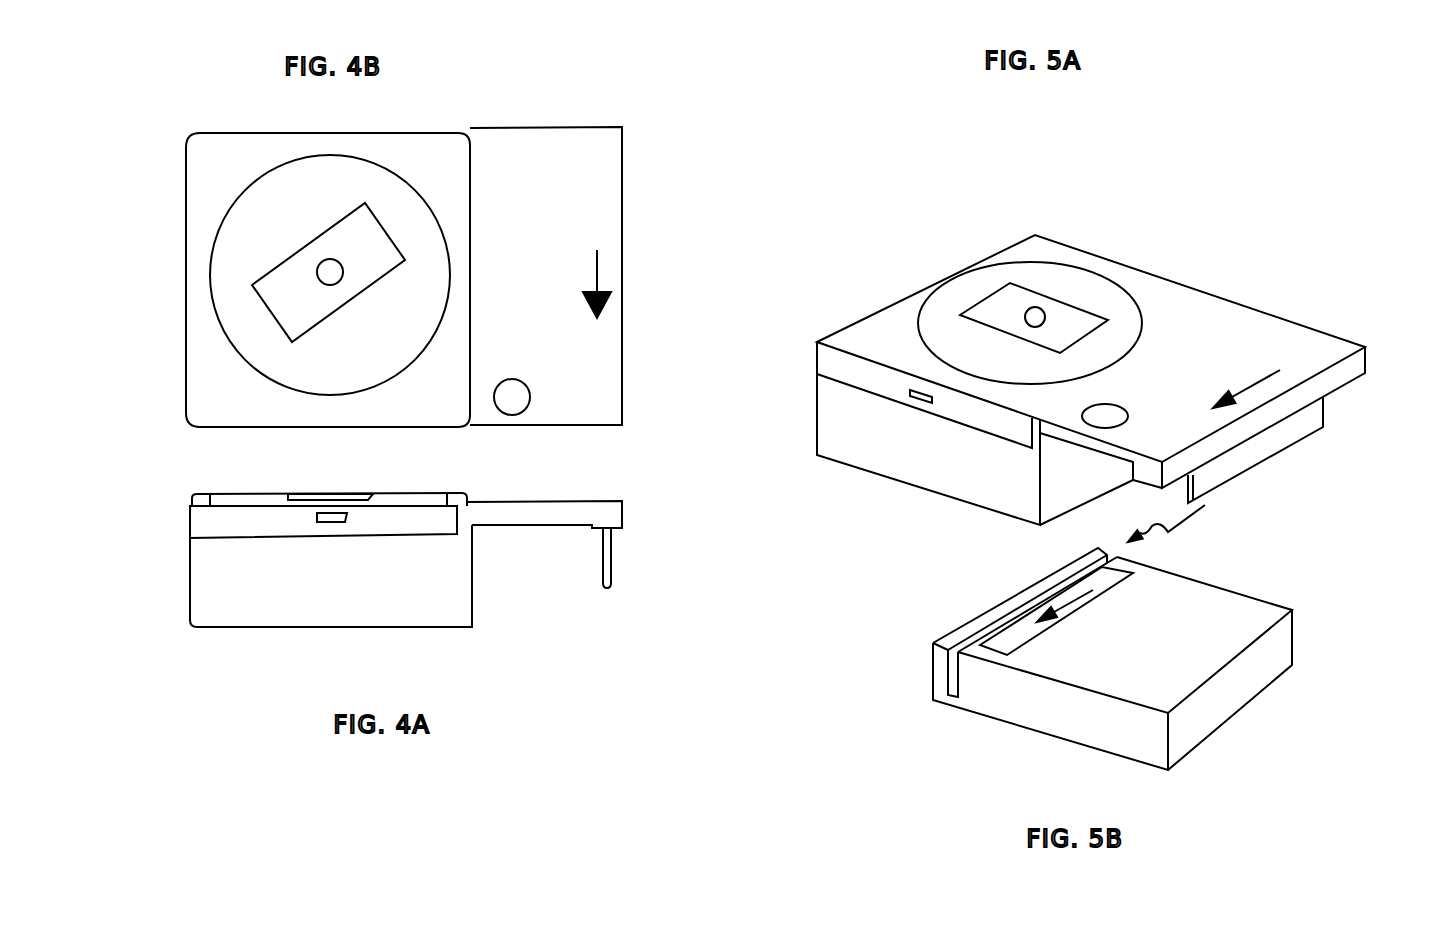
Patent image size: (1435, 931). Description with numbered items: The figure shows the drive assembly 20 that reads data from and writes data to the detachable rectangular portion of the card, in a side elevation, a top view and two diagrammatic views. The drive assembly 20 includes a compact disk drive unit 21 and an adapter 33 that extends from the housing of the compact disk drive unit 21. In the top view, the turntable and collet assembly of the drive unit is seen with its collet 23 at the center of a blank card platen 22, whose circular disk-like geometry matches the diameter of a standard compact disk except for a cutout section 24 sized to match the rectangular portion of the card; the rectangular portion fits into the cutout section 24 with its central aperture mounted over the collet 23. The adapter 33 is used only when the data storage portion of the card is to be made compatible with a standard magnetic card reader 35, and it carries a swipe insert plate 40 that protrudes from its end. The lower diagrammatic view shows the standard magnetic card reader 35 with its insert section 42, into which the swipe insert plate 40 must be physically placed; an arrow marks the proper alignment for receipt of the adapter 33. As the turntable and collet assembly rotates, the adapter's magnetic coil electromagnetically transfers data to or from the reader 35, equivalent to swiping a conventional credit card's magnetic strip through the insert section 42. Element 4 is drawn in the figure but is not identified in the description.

In FIG. 5A, the magnetic head 4 is at (1073, 317).
In FIG. 4A, the drive assembly 20 is at (190, 548).
In FIG. 5A, the drive assembly 20 is at (993, 255).
In FIG. 4A, the compact disk drive unit 21 is at (313, 592).
In FIG. 4B, the blank card platen 22 is at (315, 218).
In FIG. 5A, the blank card platen 22 is at (1042, 282).
In FIG. 4B, the collet 23 is at (328, 273).
In FIG. 5A, the collet 23 is at (1030, 312).
In FIG. 4B, the cutout section 24 is at (363, 233).
In FIG. 4A, the adapter 33 is at (537, 515).
In FIG. 5A, the adapter 33 is at (1248, 350).
In FIG. 5B, the standard magnetic card reader 35 is at (1163, 657).
In FIG. 4A, the swipe insert plate 40 is at (617, 563).
In FIG. 5A, the swipe insert plate 40 is at (1252, 458).
In FIG. 5B, the insert section 42 is at (953, 667).